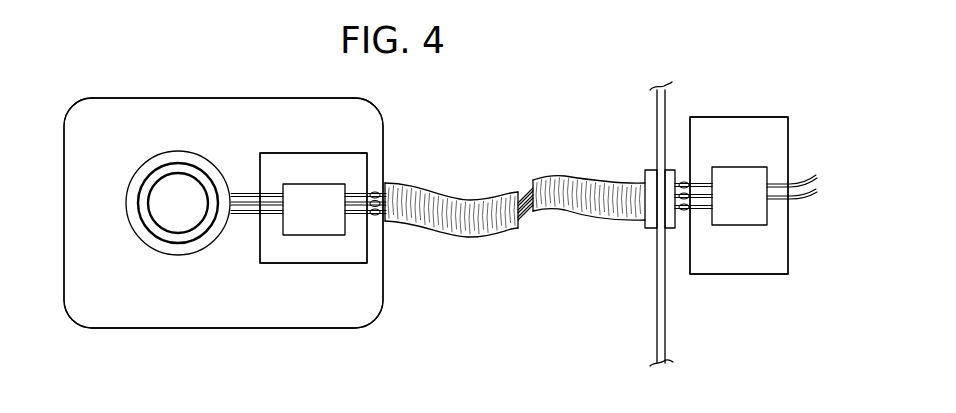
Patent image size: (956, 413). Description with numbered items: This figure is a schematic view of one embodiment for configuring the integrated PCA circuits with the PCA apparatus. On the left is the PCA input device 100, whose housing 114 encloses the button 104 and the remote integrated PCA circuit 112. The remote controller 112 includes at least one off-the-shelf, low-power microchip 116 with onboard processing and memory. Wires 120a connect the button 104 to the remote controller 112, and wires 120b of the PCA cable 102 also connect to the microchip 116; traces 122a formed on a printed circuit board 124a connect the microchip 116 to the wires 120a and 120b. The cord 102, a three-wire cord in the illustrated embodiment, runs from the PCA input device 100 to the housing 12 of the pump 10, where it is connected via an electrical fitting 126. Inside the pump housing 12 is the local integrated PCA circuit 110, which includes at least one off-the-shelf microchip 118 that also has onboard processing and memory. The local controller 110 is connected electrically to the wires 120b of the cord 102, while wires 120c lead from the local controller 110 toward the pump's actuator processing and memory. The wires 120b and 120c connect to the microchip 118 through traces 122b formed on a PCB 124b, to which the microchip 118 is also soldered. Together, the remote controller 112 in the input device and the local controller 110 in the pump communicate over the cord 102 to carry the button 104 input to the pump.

The pump 10 is at (651, 64).
The housing 12 is at (656, 278).
The PCA input device 100 is at (372, 323).
The PCA cable 102 is at (462, 199).
The button 104 is at (162, 214).
The local integrated PCA circuit 110 is at (732, 275).
The remote integrated PCA circuit 112 is at (273, 153).
The housing 114 is at (95, 139).
The microchip 116 is at (297, 219).
The microchip 118 is at (724, 207).
The wires 120a is at (259, 196).
The wires 120b is at (386, 182).
The wires 120c is at (808, 176).
The traces 122a is at (357, 185).
The traces 122b is at (702, 181).
The printed circuit board 124a is at (360, 255).
The PCB 124b is at (733, 146).
The electrical fitting 126 is at (646, 171).